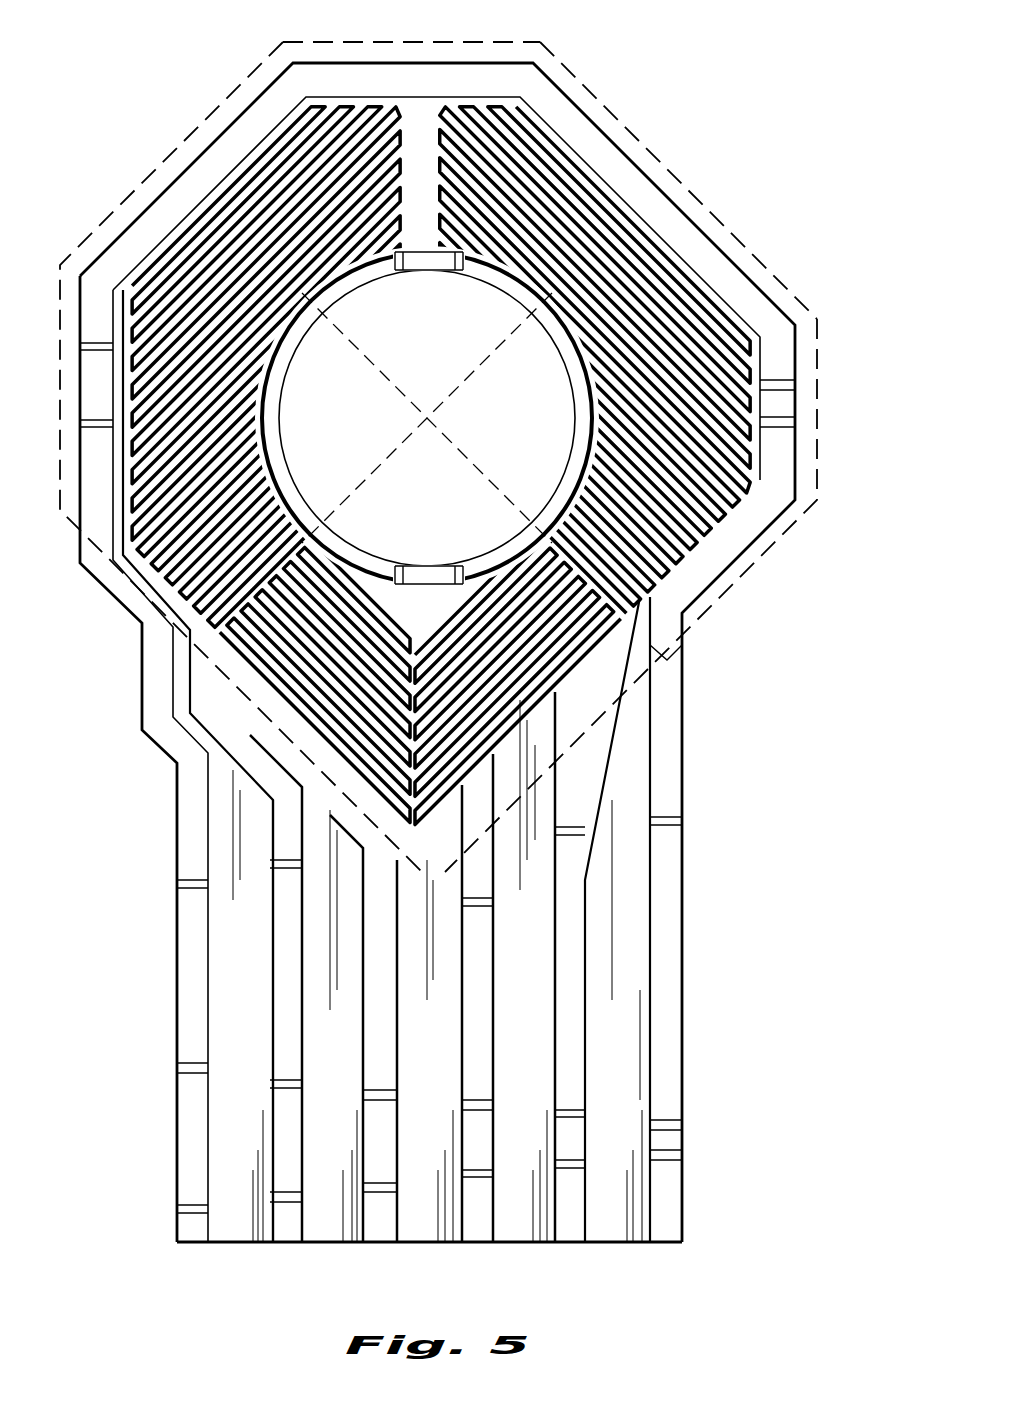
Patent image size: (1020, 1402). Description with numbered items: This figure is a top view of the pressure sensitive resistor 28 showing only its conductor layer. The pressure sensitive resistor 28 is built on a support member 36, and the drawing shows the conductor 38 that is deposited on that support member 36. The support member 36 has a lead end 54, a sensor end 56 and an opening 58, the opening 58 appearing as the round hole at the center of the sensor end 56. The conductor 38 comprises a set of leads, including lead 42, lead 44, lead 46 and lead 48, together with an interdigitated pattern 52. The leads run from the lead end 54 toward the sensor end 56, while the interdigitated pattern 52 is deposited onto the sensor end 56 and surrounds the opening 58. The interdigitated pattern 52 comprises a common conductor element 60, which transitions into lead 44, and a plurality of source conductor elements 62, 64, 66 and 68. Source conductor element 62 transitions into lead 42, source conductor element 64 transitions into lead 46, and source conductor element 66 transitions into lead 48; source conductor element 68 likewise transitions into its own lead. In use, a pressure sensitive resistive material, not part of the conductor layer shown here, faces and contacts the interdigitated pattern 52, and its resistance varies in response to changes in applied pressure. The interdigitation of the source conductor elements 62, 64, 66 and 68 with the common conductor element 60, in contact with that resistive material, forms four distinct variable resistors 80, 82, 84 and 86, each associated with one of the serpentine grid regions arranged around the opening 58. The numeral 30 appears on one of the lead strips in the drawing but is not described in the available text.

The pressure sensitive resistor 28 is at (175, 1143).
The lead 30 is at (254, 988).
The support member 36 is at (668, 968).
The conductor 38 is at (652, 1055).
The lead 42 is at (632, 961).
The lead 44 is at (537, 971).
The lead 46 is at (442, 1091).
The lead 48 is at (347, 1046).
The interdigitated pattern 52 is at (568, 143).
The lead end 54 is at (683, 1180).
The sensor end 56 is at (720, 245).
The opening 58 is at (442, 339).
The common conductor element 60 is at (493, 272).
The source conductor element 62 is at (770, 447).
The source conductor element 64 is at (236, 668).
The source conductor element 66 is at (160, 572).
The source conductor element 68 is at (512, 106).
The variable resistor 80 is at (748, 565).
The variable resistor 82 is at (415, 48).
The variable resistor 84 is at (150, 190).
The variable resistor 86 is at (247, 693).